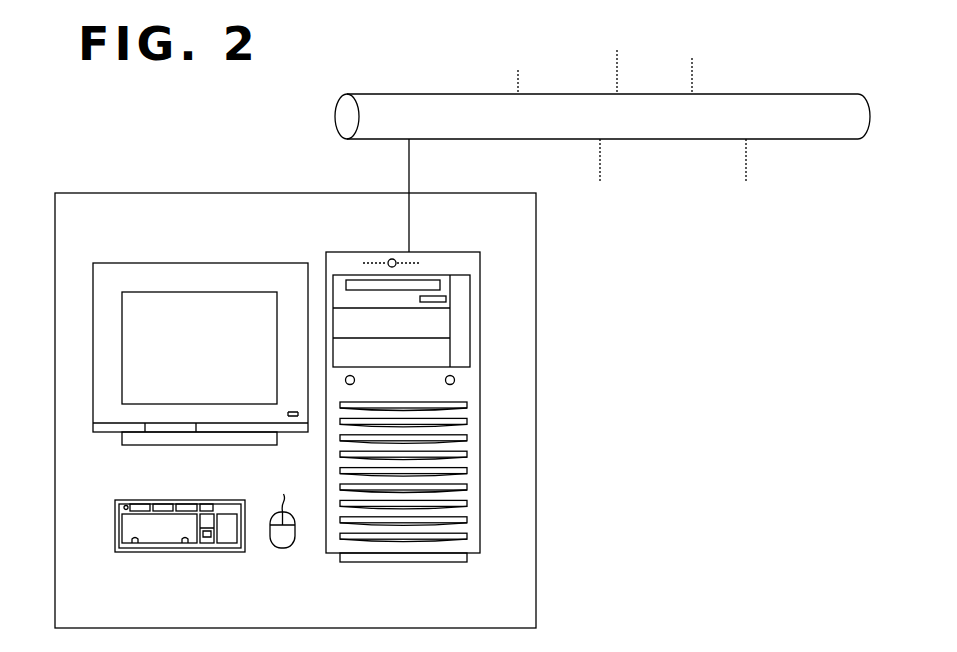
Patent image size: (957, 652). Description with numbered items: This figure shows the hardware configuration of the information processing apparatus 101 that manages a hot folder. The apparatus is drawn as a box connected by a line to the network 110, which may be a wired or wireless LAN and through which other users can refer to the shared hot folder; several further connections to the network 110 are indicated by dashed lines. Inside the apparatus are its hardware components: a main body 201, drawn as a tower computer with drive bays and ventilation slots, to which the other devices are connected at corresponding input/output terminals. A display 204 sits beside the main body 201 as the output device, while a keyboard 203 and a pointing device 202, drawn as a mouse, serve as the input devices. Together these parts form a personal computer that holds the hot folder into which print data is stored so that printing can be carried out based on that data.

The network 110 is at (413, 93).
The information processing apparatus 101 is at (85, 193).
The main body 201 is at (450, 562).
The pointing device 202 is at (284, 548).
The keyboard 203 is at (130, 552).
The display 204 is at (268, 263).